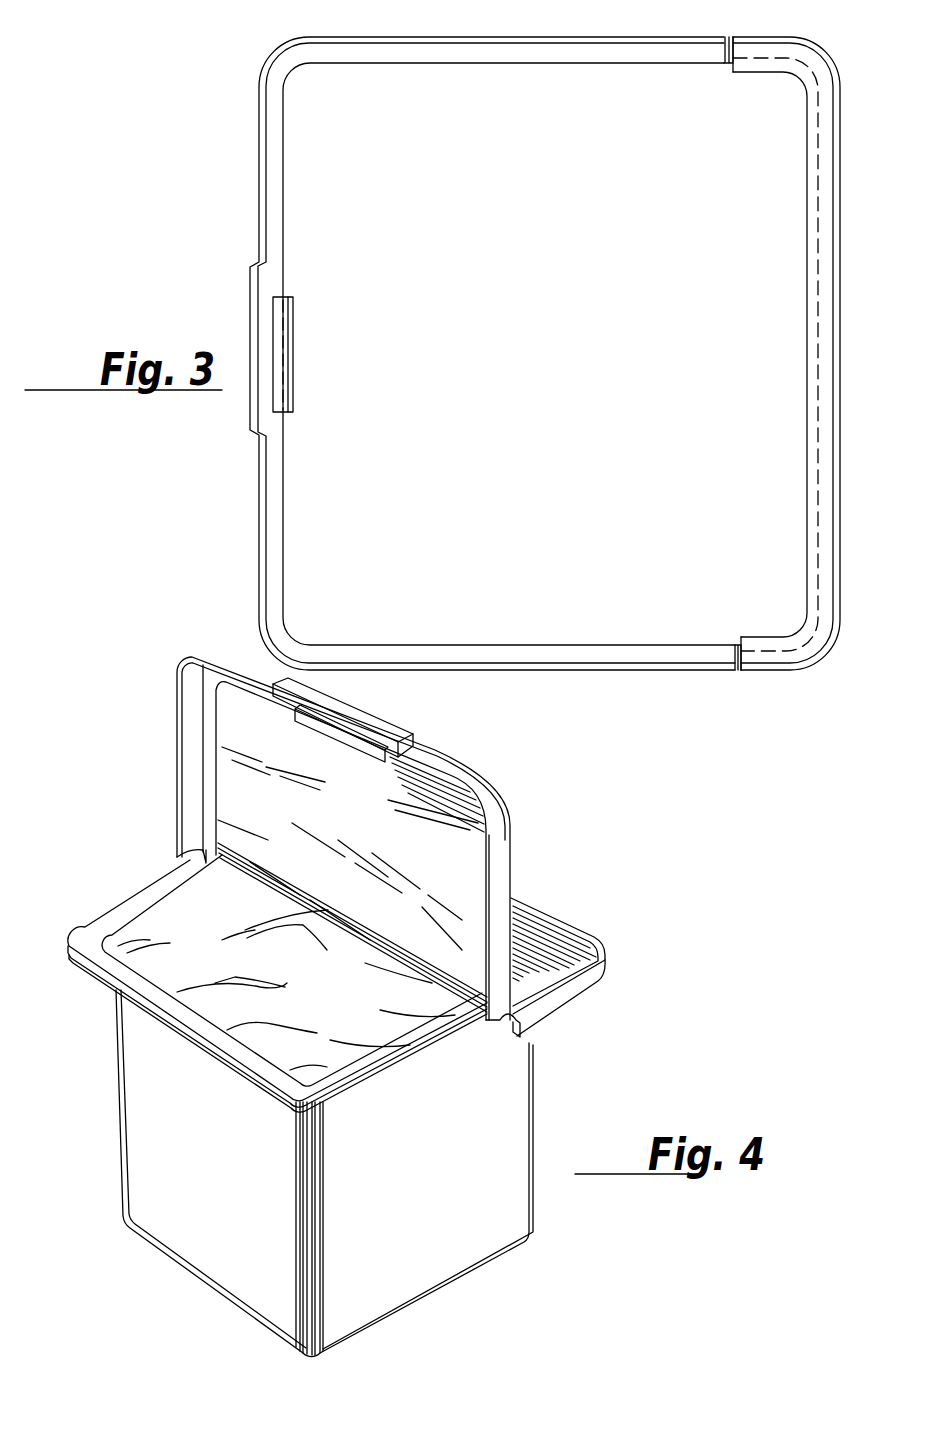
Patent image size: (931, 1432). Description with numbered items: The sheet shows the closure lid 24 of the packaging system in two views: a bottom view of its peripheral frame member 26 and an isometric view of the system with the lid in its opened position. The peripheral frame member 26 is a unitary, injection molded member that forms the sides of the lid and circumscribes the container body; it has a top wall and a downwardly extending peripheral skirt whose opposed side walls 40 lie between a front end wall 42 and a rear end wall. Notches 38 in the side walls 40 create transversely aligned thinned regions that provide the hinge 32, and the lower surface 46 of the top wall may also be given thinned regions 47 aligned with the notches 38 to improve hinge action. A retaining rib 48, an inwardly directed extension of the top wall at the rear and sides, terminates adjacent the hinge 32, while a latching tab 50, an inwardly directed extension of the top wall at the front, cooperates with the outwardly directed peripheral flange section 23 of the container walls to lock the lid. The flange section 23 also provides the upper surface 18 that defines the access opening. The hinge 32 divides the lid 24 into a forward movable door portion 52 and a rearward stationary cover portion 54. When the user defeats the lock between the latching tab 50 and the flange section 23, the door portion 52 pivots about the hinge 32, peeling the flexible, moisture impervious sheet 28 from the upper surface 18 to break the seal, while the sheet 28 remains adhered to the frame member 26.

In FIG. 4, the upper surface 18 is at (92, 940).
In FIG. 4, the peripheral flange section 23 is at (177, 1013).
In FIG. 4, the closure lid 24 is at (367, 838).
In FIG. 3, the peripheral frame member 26 is at (258, 135).
In FIG. 4, the moisture impervious sheet 28 is at (273, 781).
In FIG. 3, the hinge 32 is at (734, 676).
In FIG. 4, the hinge 32 is at (503, 1036).
In FIG. 3, the notches 38 is at (786, 368).
In FIG. 3, the side walls 40 is at (480, 36).
In FIG. 3, the front end wall 42 is at (259, 465).
In FIG. 3, the lower surface 46 is at (575, 50).
In FIG. 3, the thinned regions 47 is at (722, 56).
In FIG. 3, the retaining rib 48 is at (765, 75).
In FIG. 3, the latching tab 50 is at (283, 403).
In FIG. 4, the latching tab 50 is at (338, 740).
In FIG. 4, the door portion 52 is at (512, 855).
In FIG. 4, the cover portion 54 is at (565, 950).